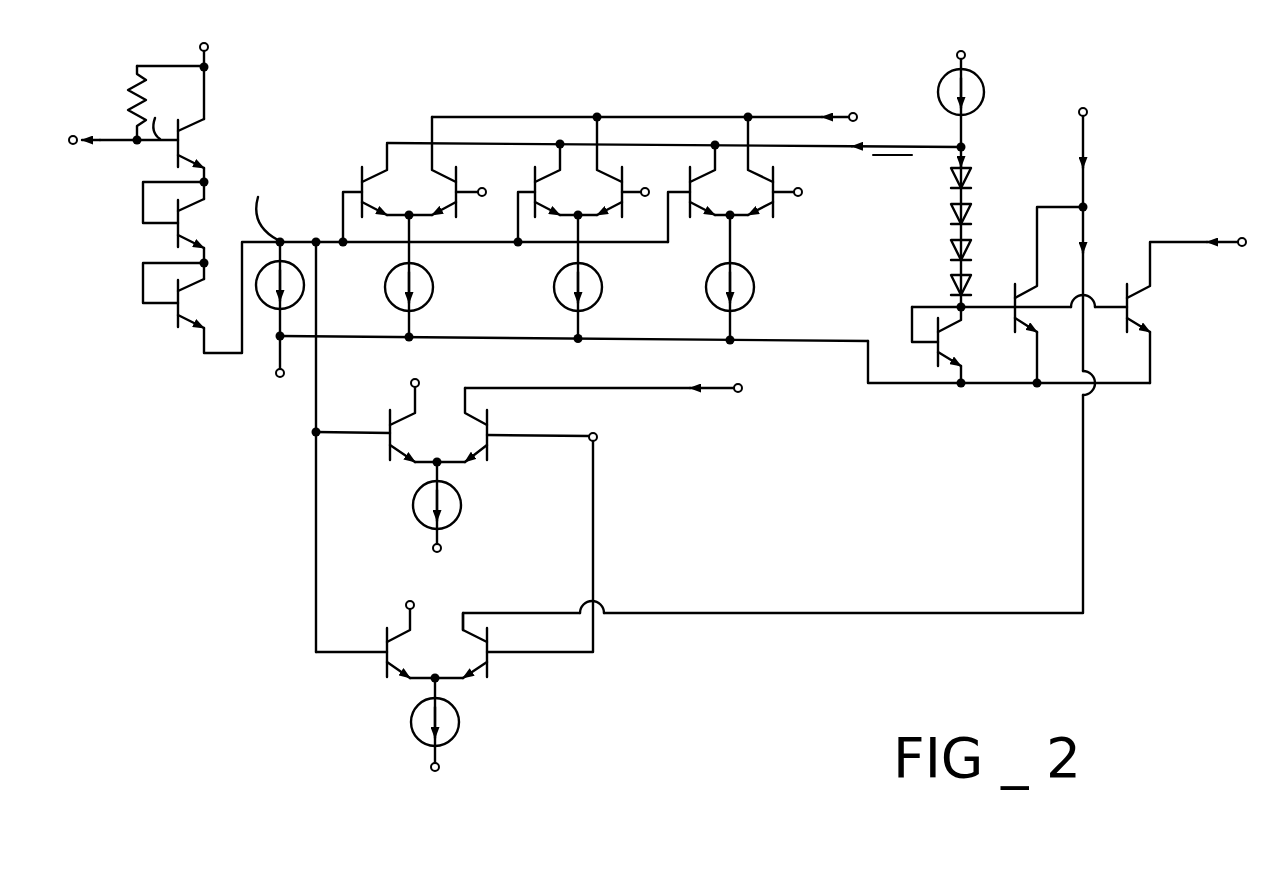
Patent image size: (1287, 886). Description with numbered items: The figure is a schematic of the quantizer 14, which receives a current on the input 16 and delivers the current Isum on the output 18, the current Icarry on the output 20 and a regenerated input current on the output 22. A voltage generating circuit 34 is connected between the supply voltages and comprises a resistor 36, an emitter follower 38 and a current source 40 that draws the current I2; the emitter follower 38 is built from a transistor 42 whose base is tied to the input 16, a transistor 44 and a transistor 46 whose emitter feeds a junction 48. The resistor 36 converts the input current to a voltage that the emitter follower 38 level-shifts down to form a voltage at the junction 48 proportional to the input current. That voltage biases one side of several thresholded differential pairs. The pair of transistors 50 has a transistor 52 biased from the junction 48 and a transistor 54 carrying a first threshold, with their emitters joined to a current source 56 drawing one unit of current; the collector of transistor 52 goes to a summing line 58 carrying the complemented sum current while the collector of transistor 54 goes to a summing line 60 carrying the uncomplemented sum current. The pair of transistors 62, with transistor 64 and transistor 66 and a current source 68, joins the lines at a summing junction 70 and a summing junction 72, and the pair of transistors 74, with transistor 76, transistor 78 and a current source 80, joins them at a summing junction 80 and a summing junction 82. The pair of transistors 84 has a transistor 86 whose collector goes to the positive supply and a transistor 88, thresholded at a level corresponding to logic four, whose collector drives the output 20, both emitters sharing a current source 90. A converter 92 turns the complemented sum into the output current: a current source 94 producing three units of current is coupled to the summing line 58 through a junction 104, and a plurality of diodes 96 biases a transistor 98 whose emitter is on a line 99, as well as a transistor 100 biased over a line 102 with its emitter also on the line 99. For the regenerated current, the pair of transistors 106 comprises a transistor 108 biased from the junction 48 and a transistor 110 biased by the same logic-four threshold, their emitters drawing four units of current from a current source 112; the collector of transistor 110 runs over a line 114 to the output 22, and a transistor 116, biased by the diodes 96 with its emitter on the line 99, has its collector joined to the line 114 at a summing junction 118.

The quantizer 14 is at (234, 478).
The input 16 is at (98, 142).
The output 18 is at (1237, 250).
The output 20 is at (712, 391).
The output 22 is at (1086, 126).
The voltage generating circuit 34 is at (182, 267).
The resistor 36 is at (147, 93).
The emitter follower 38 is at (237, 142).
The current source 40 is at (262, 277).
The transistor 42 is at (193, 143).
The transistor 44 is at (195, 222).
The transistor 46 is at (195, 312).
The junction 48 is at (284, 240).
The thresholded differential pair of transistors 50 is at (413, 182).
The transistor 52 is at (376, 193).
The transistor 54 is at (411, 172).
The current source 56 is at (392, 278).
The summing line 58 is at (400, 141).
The summing line 60 is at (445, 115).
The thresholded differential pair of transistors 62 is at (582, 182).
The transistor 64 is at (548, 193).
The transistor 66 is at (580, 172).
The current source 68 is at (561, 278).
The summing junction 70 is at (556, 142).
The summing junction 72 is at (597, 114).
The thresholded differential pair of transistors 74 is at (735, 179).
The transistor 76 is at (699, 193).
The transistor 78 is at (732, 172).
The current source / summing junction 80 is at (708, 143).
The summing junction 82 is at (748, 114).
The thresholded differential pair of transistors 84 is at (452, 423).
The transistor 86 is at (377, 424).
The transistor 88 is at (441, 412).
The current source 90 is at (414, 503).
The converter 92 is at (1099, 127).
The current source 94 is at (945, 80).
The diodes 96 is at (943, 210).
The transistor 98 is at (952, 340).
The line 99 is at (991, 386).
The transistor 100 is at (1146, 307).
The line 102 is at (990, 303).
The junction 104 is at (966, 145).
The thresholded differential pair of transistors 106 is at (401, 642).
The transistor 108 is at (376, 643).
The transistor 110 is at (437, 636).
The current source 112 is at (412, 714).
The line 114 is at (907, 611).
The transistor 116 is at (1029, 313).
The summing junction 118 is at (1088, 206).